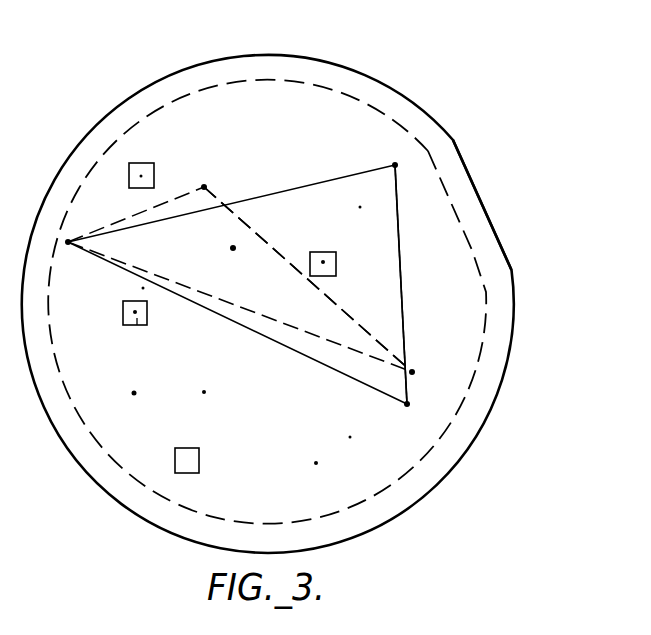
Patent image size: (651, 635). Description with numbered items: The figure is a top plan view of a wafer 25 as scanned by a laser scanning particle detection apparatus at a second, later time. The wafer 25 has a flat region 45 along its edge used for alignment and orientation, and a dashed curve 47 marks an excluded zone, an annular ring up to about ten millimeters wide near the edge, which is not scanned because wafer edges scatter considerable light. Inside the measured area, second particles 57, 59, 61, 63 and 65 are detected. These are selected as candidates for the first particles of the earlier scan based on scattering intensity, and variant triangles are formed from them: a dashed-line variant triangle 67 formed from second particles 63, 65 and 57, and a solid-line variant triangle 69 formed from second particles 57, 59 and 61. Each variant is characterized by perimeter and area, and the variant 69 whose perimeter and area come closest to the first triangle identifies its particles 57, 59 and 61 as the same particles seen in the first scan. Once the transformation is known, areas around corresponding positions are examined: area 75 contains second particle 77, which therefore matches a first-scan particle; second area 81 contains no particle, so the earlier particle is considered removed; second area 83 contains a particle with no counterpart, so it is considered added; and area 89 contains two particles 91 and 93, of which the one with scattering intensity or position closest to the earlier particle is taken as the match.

The wafer 25 is at (405, 96).
The flat region 45 is at (481, 198).
The dashed curve 47 is at (476, 248).
The second particle 57 is at (70, 245).
The second particle 59 is at (394, 163).
The second particle 61 is at (405, 408).
The second particle 63 is at (208, 185).
The second particle 65 is at (414, 371).
The variant triangle 67 is at (266, 240).
The variant triangle 69 is at (404, 301).
The area 75 is at (337, 259).
The second particle 77 is at (324, 263).
The second area 81 is at (197, 450).
The second area 83 is at (154, 168).
The area 89 is at (147, 313).
The particle 91 is at (134, 311).
The particle 93 is at (137, 326).